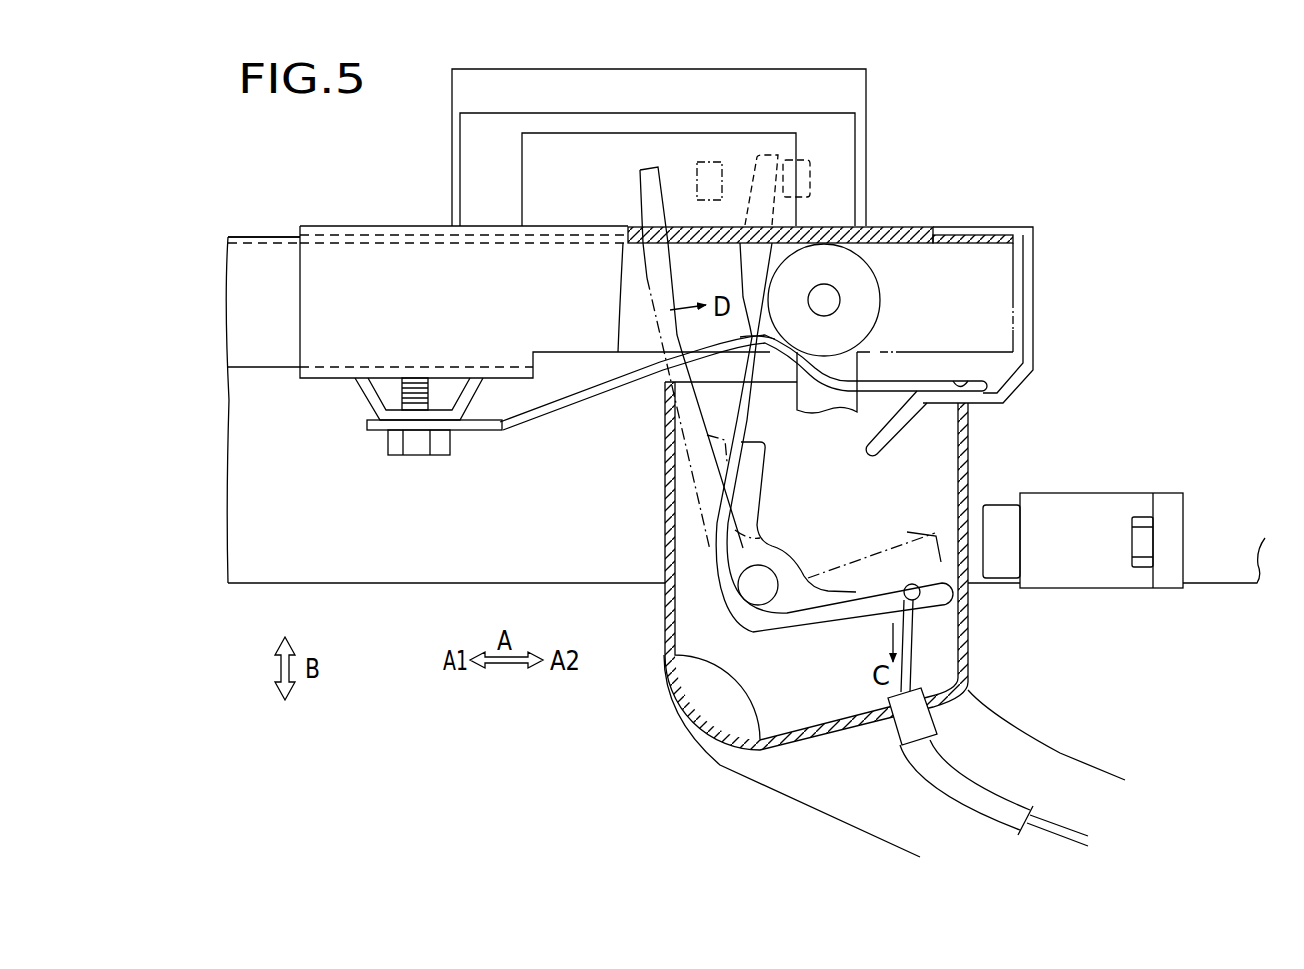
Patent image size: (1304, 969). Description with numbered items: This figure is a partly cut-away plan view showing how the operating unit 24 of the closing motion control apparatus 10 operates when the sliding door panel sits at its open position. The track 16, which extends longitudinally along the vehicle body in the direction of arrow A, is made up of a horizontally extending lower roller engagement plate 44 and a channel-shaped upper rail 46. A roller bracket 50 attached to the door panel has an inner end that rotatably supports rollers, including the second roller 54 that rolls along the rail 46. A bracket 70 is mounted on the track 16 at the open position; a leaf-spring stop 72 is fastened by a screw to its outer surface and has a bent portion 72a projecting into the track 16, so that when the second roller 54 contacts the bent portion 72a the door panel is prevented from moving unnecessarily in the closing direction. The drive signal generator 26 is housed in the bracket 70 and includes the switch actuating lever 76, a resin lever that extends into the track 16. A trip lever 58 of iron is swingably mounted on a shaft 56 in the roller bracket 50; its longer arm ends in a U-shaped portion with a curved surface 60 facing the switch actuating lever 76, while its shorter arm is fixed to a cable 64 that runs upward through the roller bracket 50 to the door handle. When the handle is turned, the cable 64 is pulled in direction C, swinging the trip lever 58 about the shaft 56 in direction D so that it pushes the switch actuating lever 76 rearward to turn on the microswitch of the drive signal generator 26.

The closing motion control apparatus 10 is at (1087, 127).
The track 16 is at (272, 231).
The operating unit 24 is at (658, 459).
The drive signal generator 26 is at (836, 141).
The roller engagement plate 44 is at (360, 568).
The upper rail 46 is at (243, 297).
The roller bracket 50 is at (783, 806).
The second roller 54 is at (866, 300).
The shaft 56 is at (762, 584).
The trip lever 58 is at (859, 622).
The curved surface 60 is at (770, 258).
The cable 64 is at (1062, 830).
The bracket 70 is at (424, 214).
The leaf-spring stop 72 is at (600, 397).
The bent portion 72a is at (773, 337).
The switch actuating lever 76 is at (818, 182).